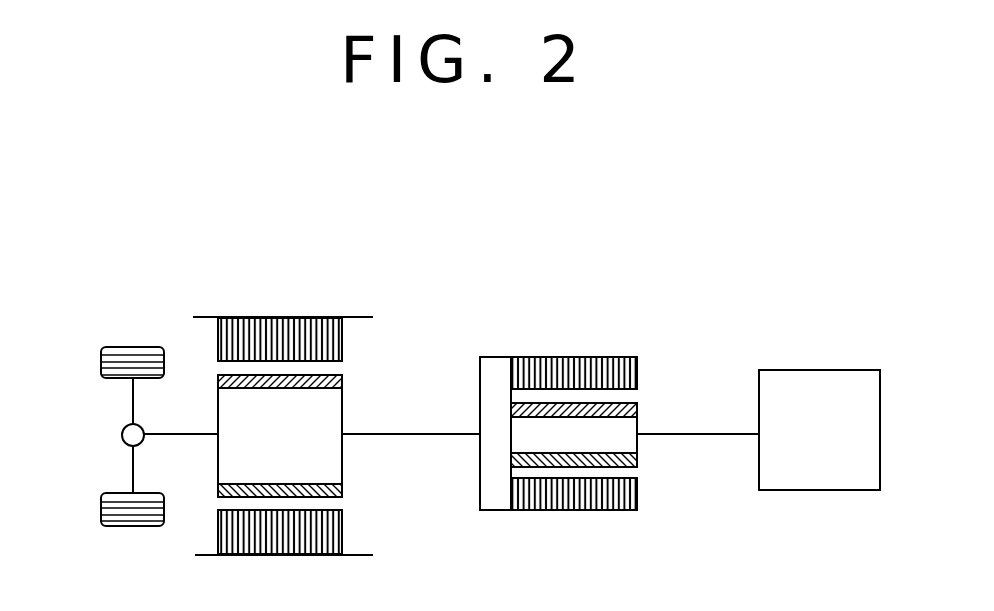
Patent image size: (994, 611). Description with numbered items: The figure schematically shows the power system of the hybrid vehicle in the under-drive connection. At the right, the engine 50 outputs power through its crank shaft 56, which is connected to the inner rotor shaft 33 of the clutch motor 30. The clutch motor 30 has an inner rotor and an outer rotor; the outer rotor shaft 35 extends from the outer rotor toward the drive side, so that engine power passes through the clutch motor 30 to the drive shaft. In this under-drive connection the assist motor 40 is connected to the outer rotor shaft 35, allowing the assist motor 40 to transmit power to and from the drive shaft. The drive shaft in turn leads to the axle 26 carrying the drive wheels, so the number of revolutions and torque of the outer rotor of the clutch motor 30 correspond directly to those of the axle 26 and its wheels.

The axle 26 is at (132, 473).
The clutch motor 30 is at (565, 333).
The inner rotor shaft 33 is at (655, 434).
The outer rotor shaft 35 is at (388, 434).
The assist motor 40 is at (292, 290).
The engine 50 is at (790, 370).
The crank shaft 56 is at (730, 432).